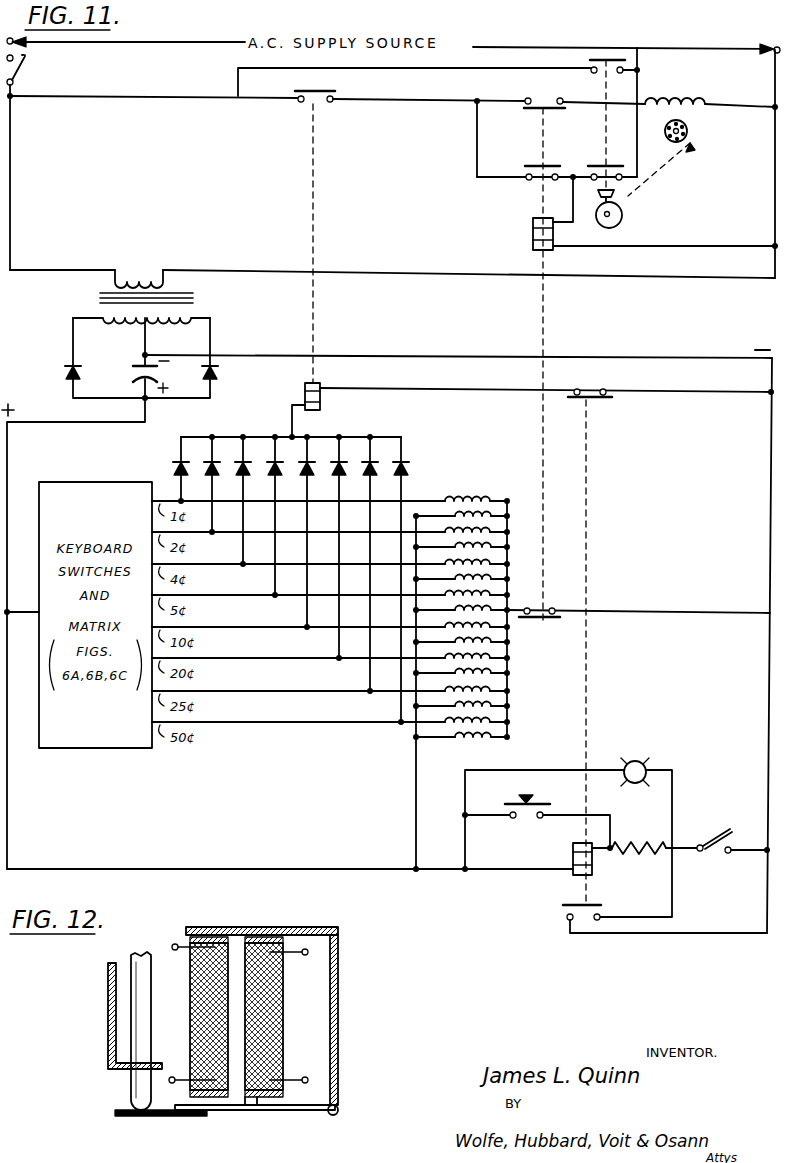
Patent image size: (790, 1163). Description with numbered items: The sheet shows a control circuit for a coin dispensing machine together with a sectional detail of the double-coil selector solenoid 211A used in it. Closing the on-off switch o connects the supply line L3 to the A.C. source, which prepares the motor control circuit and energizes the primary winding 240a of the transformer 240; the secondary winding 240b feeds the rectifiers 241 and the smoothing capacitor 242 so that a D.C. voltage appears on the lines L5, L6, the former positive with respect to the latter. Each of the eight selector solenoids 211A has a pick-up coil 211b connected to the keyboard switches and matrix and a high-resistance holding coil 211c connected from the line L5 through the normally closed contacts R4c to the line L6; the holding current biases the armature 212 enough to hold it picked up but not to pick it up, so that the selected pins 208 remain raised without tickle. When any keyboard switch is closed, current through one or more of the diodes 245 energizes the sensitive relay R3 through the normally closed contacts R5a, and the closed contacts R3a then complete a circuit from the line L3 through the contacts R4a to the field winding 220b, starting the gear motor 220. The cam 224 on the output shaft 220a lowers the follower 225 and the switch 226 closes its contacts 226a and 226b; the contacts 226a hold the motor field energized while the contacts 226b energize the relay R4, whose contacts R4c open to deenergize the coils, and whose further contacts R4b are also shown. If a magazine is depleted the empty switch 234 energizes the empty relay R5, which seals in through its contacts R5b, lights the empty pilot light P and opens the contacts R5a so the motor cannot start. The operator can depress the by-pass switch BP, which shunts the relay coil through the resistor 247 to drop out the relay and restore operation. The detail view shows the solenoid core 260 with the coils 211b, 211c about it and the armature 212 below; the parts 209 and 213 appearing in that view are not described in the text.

In FIG. 11, the on-off switch o is at (28, 74).
In FIG. 11, the voltage supply line L3 is at (12, 137).
In FIG. 11, the relay contacts R3a is at (336, 91).
In FIG. 11, the normally open contacts 226a is at (598, 58).
In FIG. 11, the switch 226 is at (622, 60).
In FIG. 11, the normally closed relay contacts R4a is at (546, 106).
In FIG. 11, the field winding 220b is at (682, 104).
In FIG. 11, the gear motor 220 is at (688, 130).
In FIG. 11, the output shaft 220a is at (667, 157).
In FIG. 11, the relay R4 contact R4b is at (538, 164).
In FIG. 11, the normally open contacts 226b is at (596, 164).
In FIG. 11, the follower 225 is at (616, 195).
In FIG. 11, the cam 224 is at (622, 219).
In FIG. 11, the relay R4 is at (533, 232).
In FIG. 11, the primary winding 240a is at (147, 282).
In FIG. 11, the transformer 240 is at (196, 301).
In FIG. 11, the secondary winding 240b is at (100, 315).
In FIG. 11, the rectifiers 241 is at (66, 368).
In FIG. 11, the smoothing capacitor 242 is at (132, 368).
In FIG. 11, the line L5 is at (8, 443).
In FIG. 11, the unidirectionally conductive diodes 245 is at (190, 460).
In FIG. 11, the relay R3 is at (322, 404).
In FIG. 11, the normally closed relay contacts R5a is at (597, 402).
In FIG. 11, the line L6 is at (770, 491).
In FIG. 11, the pick-up coils 211b is at (458, 502).
In FIG. 12, the pick-up coils 211b is at (282, 975).
In FIG. 11, the holding coils 211c is at (496, 554).
In FIG. 12, the holding coils 211c is at (260, 1008).
In FIG. 11, the normally closed relay contacts R4c is at (558, 619).
In FIG. 11, the empty pilot light P is at (640, 768).
In FIG. 11, the by-pass switch BP is at (521, 816).
In FIG. 11, the resistor 247 is at (631, 842).
In FIG. 11, the empty switch 234 is at (712, 832).
In FIG. 11, the empty relay R5 is at (592, 860).
In FIG. 11, the relay contacts R5b is at (563, 905).
In FIG. 12, the selector solenoid 211A is at (260, 930).
In FIG. 12, the bracket 209 is at (108, 1008).
In FIG. 12, the selector members or pins 208 is at (130, 1085).
In FIG. 12, the armature 212 is at (229, 1114).
In FIG. 12, the core 260 is at (256, 1106).
In FIG. 12, the pivot pin 213 is at (338, 1109).